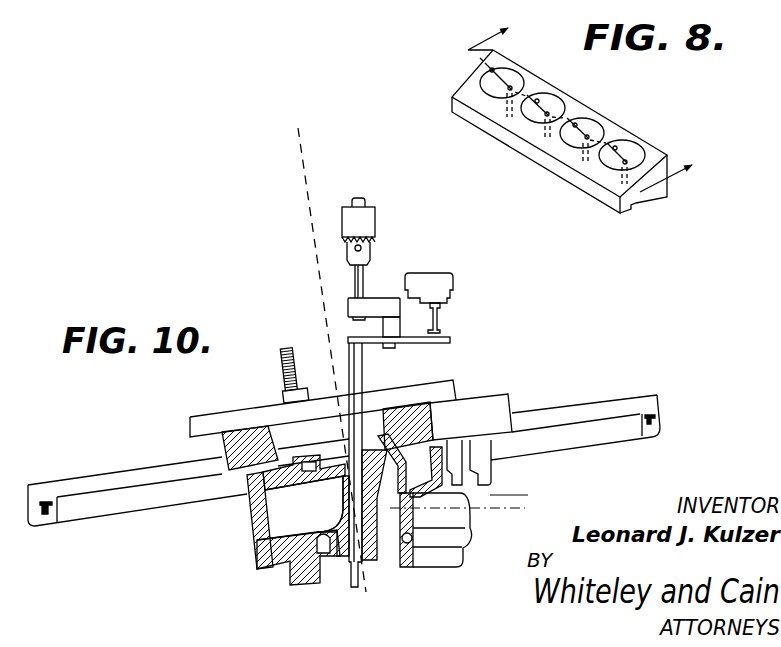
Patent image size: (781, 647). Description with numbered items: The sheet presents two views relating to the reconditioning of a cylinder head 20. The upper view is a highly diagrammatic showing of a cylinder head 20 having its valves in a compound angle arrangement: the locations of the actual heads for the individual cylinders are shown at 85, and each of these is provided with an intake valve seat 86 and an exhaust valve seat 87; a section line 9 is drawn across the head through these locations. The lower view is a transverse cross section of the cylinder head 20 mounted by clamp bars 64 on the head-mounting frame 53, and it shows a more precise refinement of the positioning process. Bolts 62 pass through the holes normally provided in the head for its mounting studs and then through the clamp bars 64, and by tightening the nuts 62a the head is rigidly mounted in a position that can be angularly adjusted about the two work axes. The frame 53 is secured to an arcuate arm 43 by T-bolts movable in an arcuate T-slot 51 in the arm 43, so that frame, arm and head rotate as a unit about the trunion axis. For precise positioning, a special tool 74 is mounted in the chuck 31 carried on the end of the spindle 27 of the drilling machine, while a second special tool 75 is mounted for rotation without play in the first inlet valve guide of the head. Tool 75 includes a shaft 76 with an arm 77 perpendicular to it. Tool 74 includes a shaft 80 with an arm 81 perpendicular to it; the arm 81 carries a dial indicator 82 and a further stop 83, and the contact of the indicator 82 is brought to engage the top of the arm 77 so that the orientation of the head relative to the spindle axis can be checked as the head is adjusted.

In FIG. 8, the section line 9- 9 is at (590, 100).
In FIG. 8, the cylinder head 20 is at (449, 97).
In FIG. 10, the cylinder head 20 is at (251, 543).
In FIG. 8, the actual heads for the individual cylinders 85 is at (512, 78).
In FIG. 8, the intake valve seat 86 is at (575, 123).
In FIG. 8, the exhaust valve seat 87 is at (588, 138).
In FIG. 10, the spindle 27 is at (364, 203).
In FIG. 10, the chuck 31 is at (368, 228).
In FIG. 10, the arcuate arm 43 is at (620, 407).
In FIG. 10, the T-slot 51 is at (660, 421).
In FIG. 10, the head-mounting frame 53 is at (416, 427).
In FIG. 10, the bolt 62 is at (286, 360).
In FIG. 10, the nut 62a is at (284, 393).
In FIG. 10, the clamp bar 64 is at (190, 428).
In FIG. 10, the special tool 74 is at (375, 285).
In FIG. 10, the second special tool 75 is at (341, 346).
In FIG. 10, the shaft 76 is at (367, 364).
In FIG. 10, the arm 77 is at (448, 335).
In FIG. 10, the shaft 80 is at (357, 277).
In FIG. 10, the arm 81 is at (372, 305).
In FIG. 10, the dial indicator 82 is at (448, 283).
In FIG. 10, the stop 83 is at (388, 327).